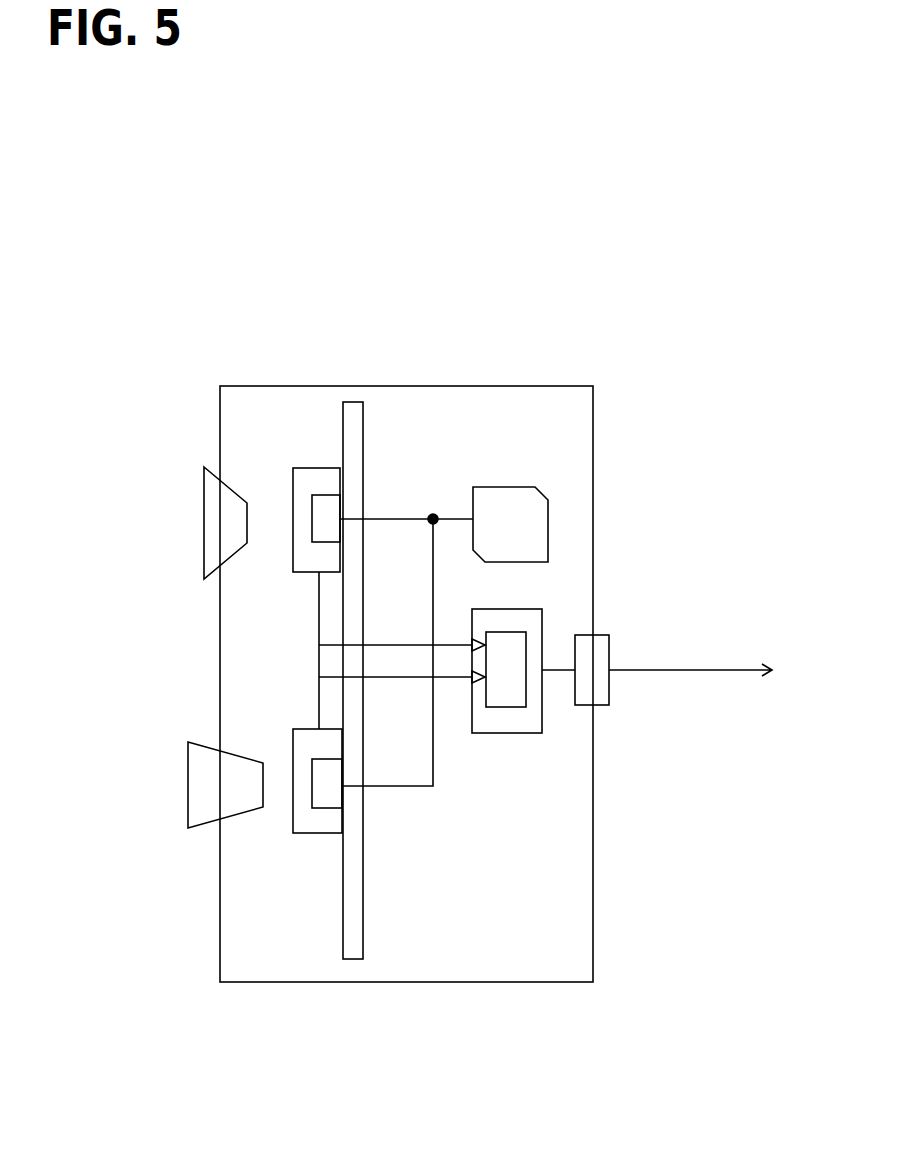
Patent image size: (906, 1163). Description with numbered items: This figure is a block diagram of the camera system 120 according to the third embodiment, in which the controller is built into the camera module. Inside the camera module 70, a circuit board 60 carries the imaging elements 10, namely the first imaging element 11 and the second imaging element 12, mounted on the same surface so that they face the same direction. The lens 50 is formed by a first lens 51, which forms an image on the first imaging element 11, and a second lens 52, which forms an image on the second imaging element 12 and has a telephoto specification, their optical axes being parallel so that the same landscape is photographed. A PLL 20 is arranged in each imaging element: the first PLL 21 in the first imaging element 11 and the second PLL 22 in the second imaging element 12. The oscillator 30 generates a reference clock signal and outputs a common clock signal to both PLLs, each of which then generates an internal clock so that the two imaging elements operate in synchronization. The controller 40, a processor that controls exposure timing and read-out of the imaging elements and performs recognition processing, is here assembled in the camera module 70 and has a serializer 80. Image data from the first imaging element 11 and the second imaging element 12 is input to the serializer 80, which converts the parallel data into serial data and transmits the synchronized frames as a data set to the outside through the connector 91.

The camera system 120 is at (692, 335).
The camera module 70 is at (477, 386).
The circuit board 60 is at (352, 402).
The lens 50 is at (191, 536).
The first lens 51 is at (203, 477).
The second lens 52 is at (188, 755).
The imaging element 10 is at (323, 519).
The first imaging element 11 is at (307, 468).
The first PLL 21 is at (333, 495).
The PLL 20 is at (332, 552).
The second imaging element 12 is at (307, 833).
The second PLL 22 is at (332, 808).
The oscillator 30 is at (508, 487).
The controller 40 is at (515, 733).
The serializer 80 is at (527, 645).
The connector 91 is at (602, 705).